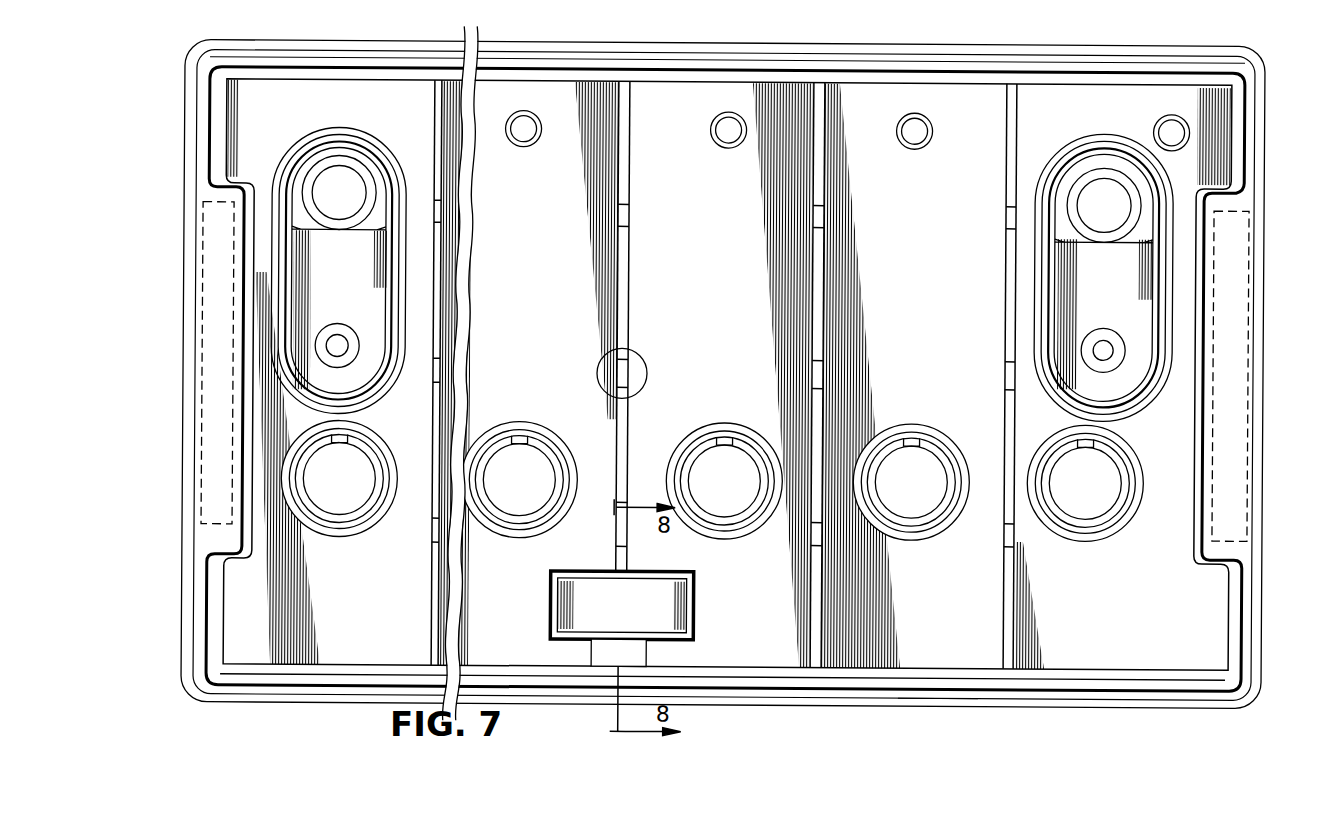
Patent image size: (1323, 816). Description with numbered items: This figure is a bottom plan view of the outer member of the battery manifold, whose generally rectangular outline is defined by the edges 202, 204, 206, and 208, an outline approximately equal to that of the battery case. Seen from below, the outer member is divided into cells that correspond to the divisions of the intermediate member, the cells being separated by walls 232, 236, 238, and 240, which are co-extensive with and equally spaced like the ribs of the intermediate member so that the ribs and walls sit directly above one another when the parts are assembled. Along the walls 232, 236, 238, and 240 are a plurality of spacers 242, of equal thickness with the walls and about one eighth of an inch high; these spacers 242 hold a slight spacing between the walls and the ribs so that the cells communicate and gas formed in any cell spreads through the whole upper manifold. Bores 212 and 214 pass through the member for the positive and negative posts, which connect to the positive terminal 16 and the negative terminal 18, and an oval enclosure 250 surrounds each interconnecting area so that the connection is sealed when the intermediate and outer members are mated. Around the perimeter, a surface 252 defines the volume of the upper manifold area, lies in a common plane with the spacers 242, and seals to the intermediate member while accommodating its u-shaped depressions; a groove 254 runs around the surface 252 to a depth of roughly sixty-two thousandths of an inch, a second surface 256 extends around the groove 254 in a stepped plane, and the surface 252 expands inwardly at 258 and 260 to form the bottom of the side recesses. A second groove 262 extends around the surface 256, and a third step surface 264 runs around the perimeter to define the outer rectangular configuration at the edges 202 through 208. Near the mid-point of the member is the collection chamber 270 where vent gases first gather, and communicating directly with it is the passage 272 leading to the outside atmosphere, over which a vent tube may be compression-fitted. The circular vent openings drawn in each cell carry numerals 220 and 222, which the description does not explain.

The positive terminal 16 is at (343, 348).
The negative terminal 18 is at (1109, 348).
The edge 202 is at (176, 385).
The edge 204 is at (720, 43).
The edge 206 is at (1266, 405).
The edge 208 is at (740, 705).
The bore 212 is at (322, 205).
The bore 214 is at (1087, 213).
The vent opening 220 is at (320, 536).
The vent plug 222 is at (323, 491).
The wall 232 is at (432, 302).
The wall 236 is at (617, 330).
The wall 238 is at (812, 335).
The wall 240 is at (1005, 330).
The spacer 242 is at (433, 210).
The oval enclosure 250 is at (308, 398).
The surface 252 is at (750, 678).
The groove 254 is at (822, 698).
The second surface 256 is at (1142, 690).
The inward expansion of surface 258 is at (1232, 494).
The inward expansion of surface 260 is at (213, 473).
The second groove 262 is at (938, 704).
The third step surface 264 is at (540, 133).
The collection chamber 270 is at (590, 609).
The passage 272 is at (604, 664).